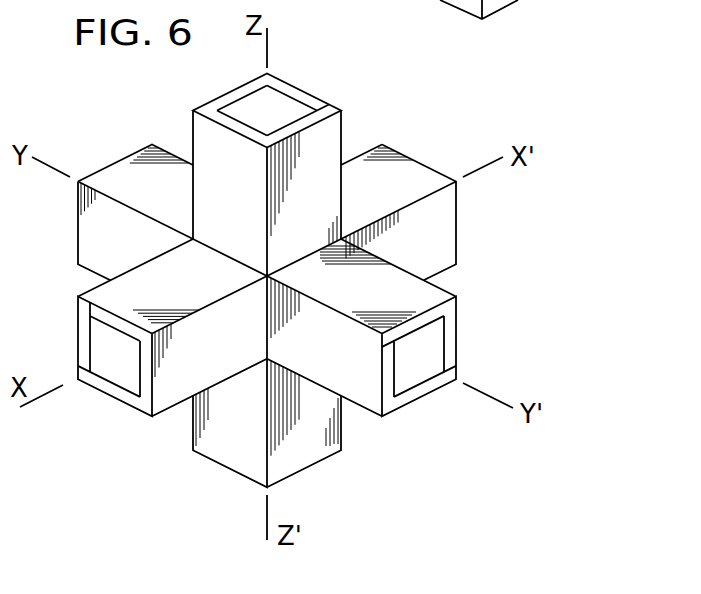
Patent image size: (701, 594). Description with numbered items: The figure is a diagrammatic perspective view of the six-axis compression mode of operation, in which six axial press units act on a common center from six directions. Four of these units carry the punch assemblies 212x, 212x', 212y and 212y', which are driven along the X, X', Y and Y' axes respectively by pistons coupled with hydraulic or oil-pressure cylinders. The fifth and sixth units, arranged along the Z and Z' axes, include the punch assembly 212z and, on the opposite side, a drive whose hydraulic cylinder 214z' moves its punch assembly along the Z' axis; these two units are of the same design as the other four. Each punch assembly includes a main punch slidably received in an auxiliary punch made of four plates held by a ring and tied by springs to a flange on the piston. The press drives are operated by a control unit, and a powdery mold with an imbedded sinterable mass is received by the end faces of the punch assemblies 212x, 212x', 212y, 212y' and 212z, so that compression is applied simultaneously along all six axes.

The punch assembly 212x is at (157, 352).
The punch assembly 212y is at (135, 187).
The punch assembly 212z is at (329, 90).
The punch assembly 212x' is at (450, 213).
The punch assembly 212y' is at (382, 353).
The hydraulic cylinder 214z' is at (249, 446).